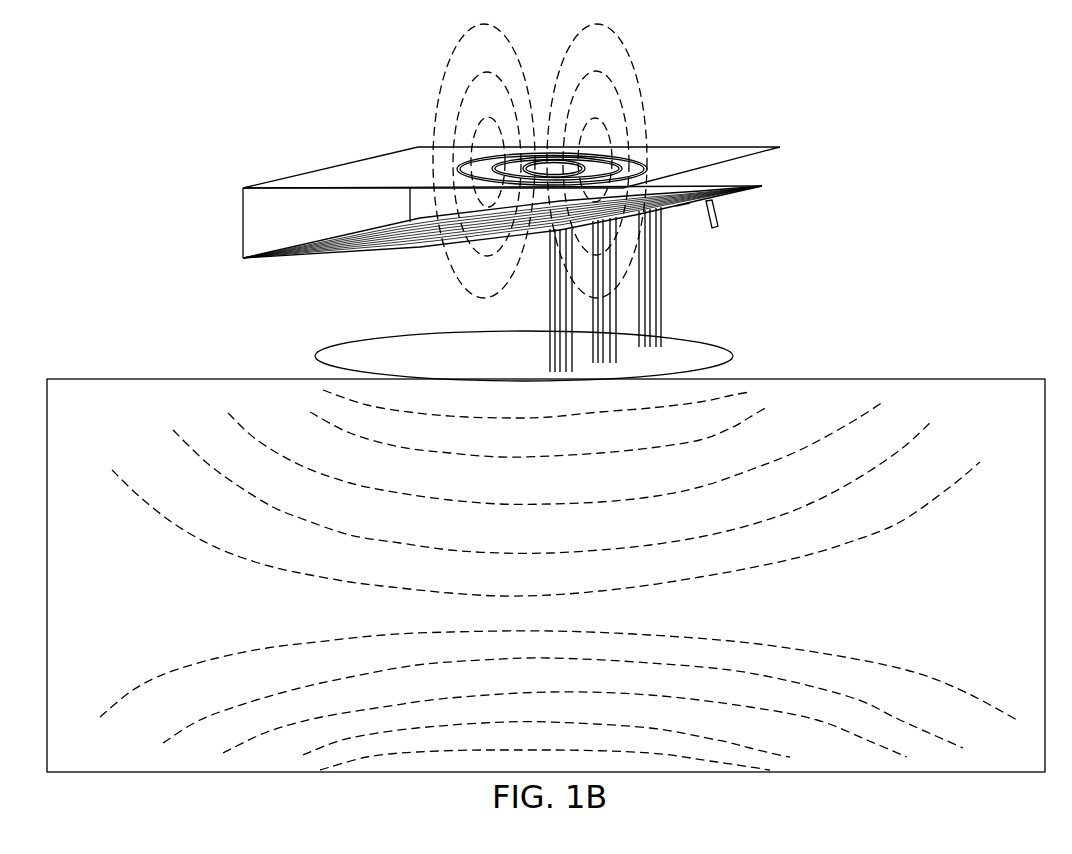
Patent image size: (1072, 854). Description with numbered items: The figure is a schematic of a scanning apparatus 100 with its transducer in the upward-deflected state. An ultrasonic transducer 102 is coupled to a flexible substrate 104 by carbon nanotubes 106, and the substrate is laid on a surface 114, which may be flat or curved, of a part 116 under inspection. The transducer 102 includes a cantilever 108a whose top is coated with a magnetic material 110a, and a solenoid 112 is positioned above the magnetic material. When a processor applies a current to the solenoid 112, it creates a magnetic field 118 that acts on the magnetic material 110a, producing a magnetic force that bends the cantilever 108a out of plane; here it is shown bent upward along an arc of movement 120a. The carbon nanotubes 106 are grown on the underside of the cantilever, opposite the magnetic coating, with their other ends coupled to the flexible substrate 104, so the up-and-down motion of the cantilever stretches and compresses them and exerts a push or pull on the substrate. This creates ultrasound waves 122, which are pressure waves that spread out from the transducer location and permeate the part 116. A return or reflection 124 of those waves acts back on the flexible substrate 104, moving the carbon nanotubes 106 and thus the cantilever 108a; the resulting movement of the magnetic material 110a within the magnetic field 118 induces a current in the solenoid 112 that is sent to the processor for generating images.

The scanning apparatus 100 is at (262, 94).
The ultrasonic transducer 102 is at (786, 148).
The flexible substrate 104 is at (733, 356).
The carbon nanotubes 106 is at (665, 297).
The cantilever 108a is at (683, 210).
The magnetic material 110a is at (412, 246).
The solenoid 112 is at (650, 168).
The surface 114 is at (885, 334).
The part 116 is at (1020, 422).
The magnetic field 118 is at (631, 62).
The arc of movement 120a is at (719, 231).
The ultrasound waves 122 is at (950, 491).
The return or reflection 124 is at (960, 694).